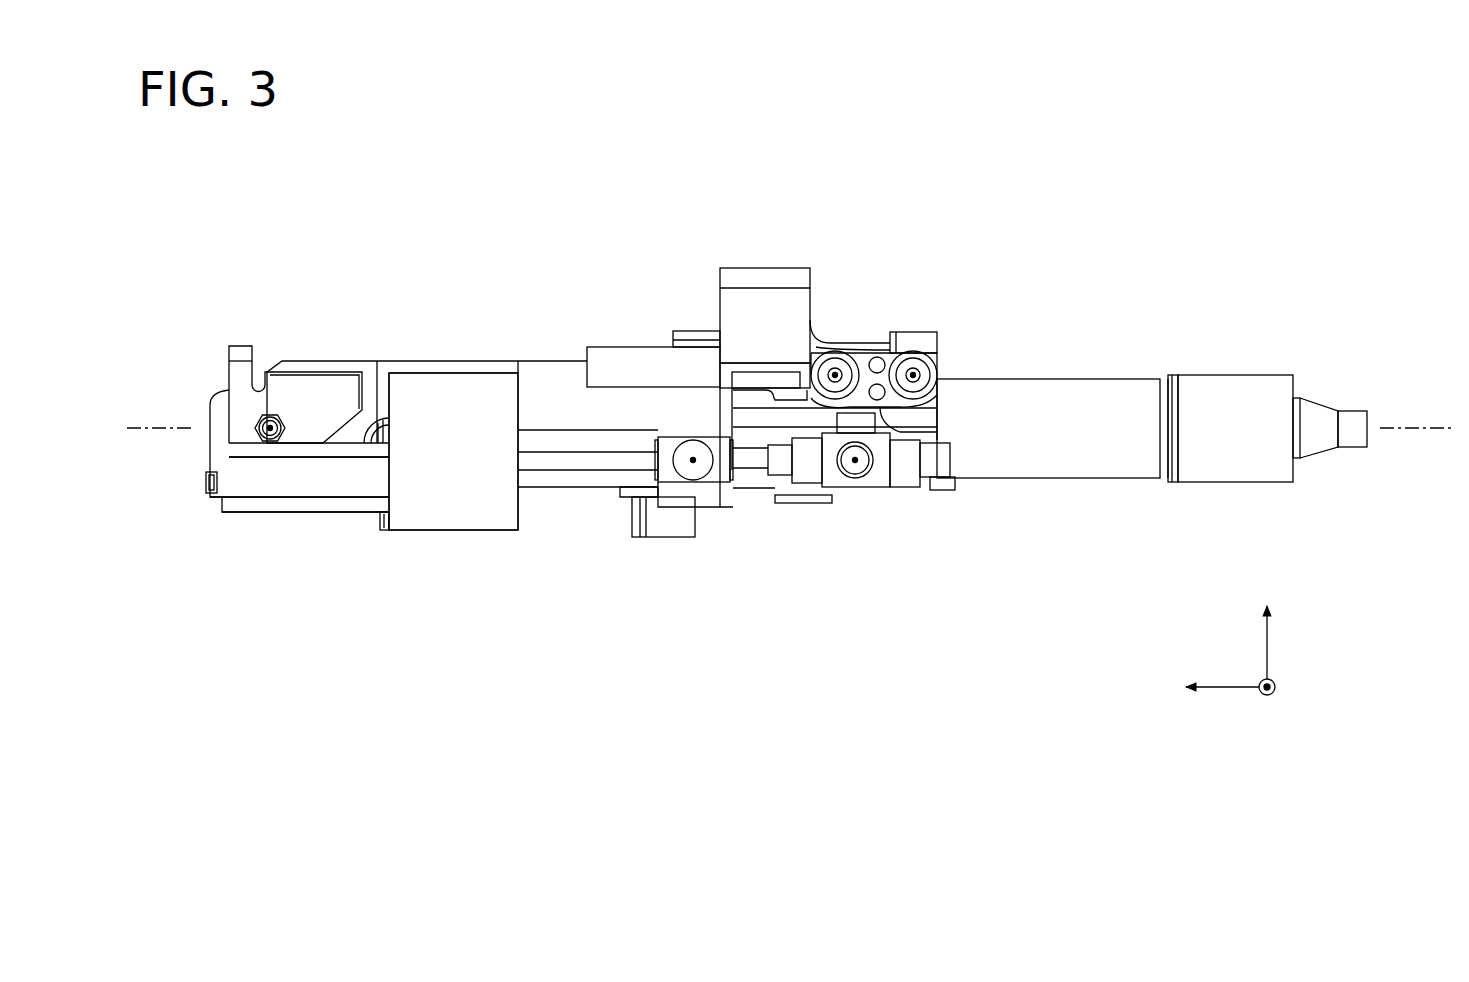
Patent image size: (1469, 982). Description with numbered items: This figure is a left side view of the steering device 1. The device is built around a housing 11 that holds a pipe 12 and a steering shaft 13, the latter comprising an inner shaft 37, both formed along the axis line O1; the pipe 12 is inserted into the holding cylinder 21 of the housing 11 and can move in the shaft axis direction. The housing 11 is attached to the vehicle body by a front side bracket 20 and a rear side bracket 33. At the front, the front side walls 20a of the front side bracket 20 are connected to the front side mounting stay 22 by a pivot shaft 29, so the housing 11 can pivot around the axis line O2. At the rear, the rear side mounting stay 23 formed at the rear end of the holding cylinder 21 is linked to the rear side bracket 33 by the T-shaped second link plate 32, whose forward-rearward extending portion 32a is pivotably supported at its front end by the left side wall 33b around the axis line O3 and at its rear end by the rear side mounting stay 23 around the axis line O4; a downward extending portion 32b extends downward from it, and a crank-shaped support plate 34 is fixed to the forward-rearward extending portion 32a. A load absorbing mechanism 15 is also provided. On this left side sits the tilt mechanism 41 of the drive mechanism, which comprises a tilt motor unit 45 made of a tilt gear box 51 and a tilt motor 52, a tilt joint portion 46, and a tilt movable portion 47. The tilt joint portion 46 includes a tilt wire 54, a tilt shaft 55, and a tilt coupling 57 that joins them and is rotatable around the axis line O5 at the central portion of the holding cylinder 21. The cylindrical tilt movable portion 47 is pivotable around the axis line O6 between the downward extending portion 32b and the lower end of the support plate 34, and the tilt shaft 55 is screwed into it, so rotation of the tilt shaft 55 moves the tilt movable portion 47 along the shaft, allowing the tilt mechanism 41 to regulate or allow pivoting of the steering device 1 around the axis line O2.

The steering device 1 is at (1065, 215).
The housing 11 is at (556, 356).
The pipe 12 is at (1267, 491).
The steering shaft 13 is at (1355, 422).
The inner shaft 37 is at (1373, 381).
The load absorbing mechanism 15 is at (691, 331).
The front side bracket 20 is at (233, 357).
The front side wall 20a is at (243, 403).
The holding cylinder 21 is at (535, 377).
The front side mounting stay 22 is at (362, 372).
The rear side mounting stay 23 is at (928, 333).
The pivot shaft 29 is at (262, 447).
The second link plate 32 is at (942, 368).
The forward-rearward extending portion 32a is at (895, 350).
The downward extending portion 32b is at (900, 432).
The rear side bracket 33 is at (768, 278).
The left side wall 33b is at (800, 322).
The support plate 34 is at (878, 480).
The tilt mechanism 41 is at (528, 530).
The tilt motor unit 45 is at (302, 647).
The tilt joint portion 46 is at (645, 647).
The tilt movable portion 47 is at (782, 482).
The tilt gear box 51 is at (415, 512).
The tilt motor 52 is at (316, 488).
The tilt wire 54 is at (598, 462).
The tilt shaft 55 is at (757, 490).
The tilt coupling 57 is at (720, 478).
The axis line O1 is at (130, 426).
The axis line O2 is at (268, 447).
The axis line O3 is at (835, 375).
The axis line O4 is at (913, 375).
The axis line O5 is at (693, 460).
The axis line O6 is at (855, 460).